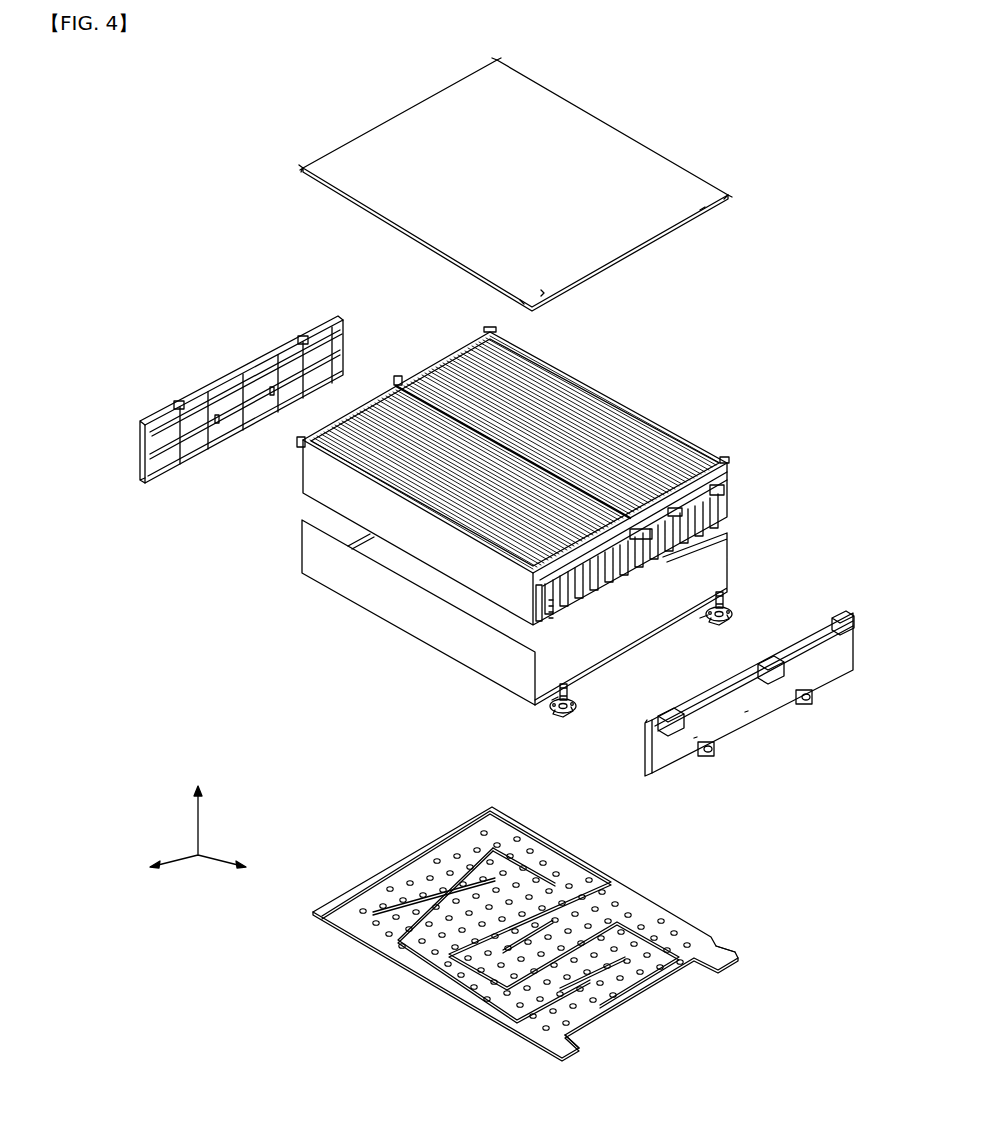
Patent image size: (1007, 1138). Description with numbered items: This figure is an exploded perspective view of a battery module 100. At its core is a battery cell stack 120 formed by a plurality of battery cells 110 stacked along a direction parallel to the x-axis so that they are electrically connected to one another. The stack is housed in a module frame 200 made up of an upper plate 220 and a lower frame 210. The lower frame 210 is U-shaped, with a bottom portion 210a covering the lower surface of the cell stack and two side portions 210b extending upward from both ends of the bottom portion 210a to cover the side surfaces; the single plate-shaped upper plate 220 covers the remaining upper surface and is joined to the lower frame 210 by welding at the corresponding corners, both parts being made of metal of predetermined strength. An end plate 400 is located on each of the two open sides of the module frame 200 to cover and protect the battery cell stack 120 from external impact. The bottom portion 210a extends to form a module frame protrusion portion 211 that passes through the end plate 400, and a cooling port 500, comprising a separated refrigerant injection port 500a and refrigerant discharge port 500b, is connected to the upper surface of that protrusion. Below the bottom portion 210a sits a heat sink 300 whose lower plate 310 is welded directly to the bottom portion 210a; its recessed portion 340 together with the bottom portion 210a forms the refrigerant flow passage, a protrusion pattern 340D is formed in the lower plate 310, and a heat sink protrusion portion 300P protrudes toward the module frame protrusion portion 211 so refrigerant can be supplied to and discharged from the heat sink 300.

The battery module 100 is at (257, 74).
The battery cell 110 is at (513, 475).
The battery cell stack 120 is at (644, 415).
The module frame 200 is at (808, 326).
The lower frame 210 is at (321, 652).
The bottom portion 210a is at (564, 620).
The side portion 210b is at (414, 620).
The module frame protrusion portion 211 is at (550, 706).
The upper plate 220 is at (624, 138).
The heat sink 300 is at (542, 923).
The lower plate 310 is at (375, 948).
The recessed portion 340 is at (625, 985).
The protrusion pattern 340D is at (448, 971).
The heat sink protrusion portion 300P is at (728, 951).
The end plate 400 is at (246, 364).
The cooling port 500 is at (808, 415).
The refrigerant injection port 500a is at (729, 598).
The refrigerant discharge port 500b is at (577, 688).